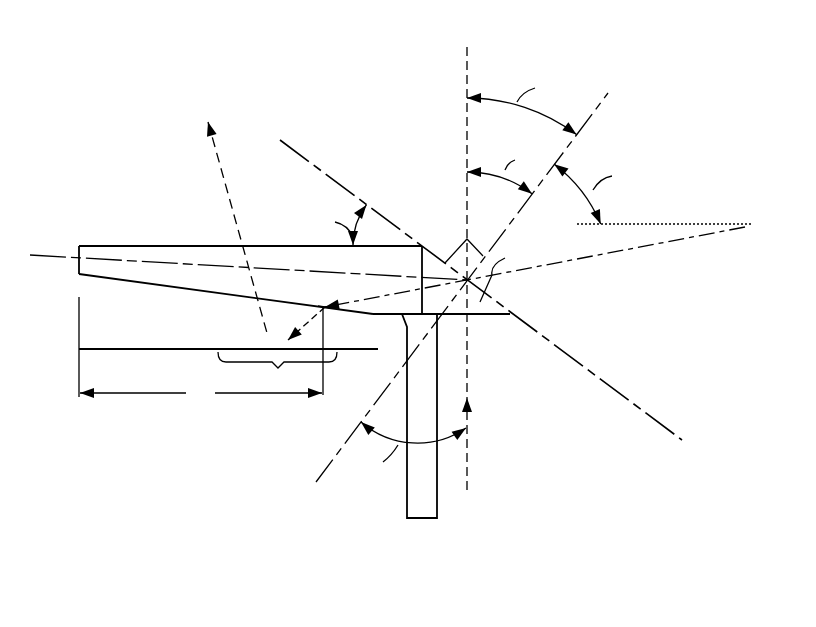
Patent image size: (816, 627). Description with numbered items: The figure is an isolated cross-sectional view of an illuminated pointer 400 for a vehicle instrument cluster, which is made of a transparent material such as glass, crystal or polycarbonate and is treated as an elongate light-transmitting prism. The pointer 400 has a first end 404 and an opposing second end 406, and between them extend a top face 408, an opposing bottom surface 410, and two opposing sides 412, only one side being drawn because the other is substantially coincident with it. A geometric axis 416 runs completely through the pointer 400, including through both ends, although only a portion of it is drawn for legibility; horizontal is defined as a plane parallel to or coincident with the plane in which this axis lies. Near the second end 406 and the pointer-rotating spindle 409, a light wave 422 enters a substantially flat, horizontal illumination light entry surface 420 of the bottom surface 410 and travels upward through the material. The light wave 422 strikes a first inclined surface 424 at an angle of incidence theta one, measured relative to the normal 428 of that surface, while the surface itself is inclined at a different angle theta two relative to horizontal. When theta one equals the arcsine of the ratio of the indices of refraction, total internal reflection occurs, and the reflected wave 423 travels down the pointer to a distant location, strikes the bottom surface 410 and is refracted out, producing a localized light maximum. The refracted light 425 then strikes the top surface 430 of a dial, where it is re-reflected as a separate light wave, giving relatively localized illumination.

The illuminated pointer 400 is at (140, 58).
The first end 404 is at (630, 292).
The second end 406 is at (81, 228).
The top face 408 is at (274, 232).
The pointer-rotating spindle 409 is at (407, 507).
The bottom surface 410 is at (148, 293).
The side 412 is at (137, 250).
The geometric axis 416 is at (198, 265).
The illumination light entry surface 420 is at (493, 316).
The light wave 422 is at (470, 378).
The reflected wave 423 is at (552, 264).
The first inclined surface 424 is at (498, 310).
The refracted light 425 is at (323, 309).
The normal of the first inclined surface 428 is at (592, 116).
The top surface of a dial 430 is at (125, 340).